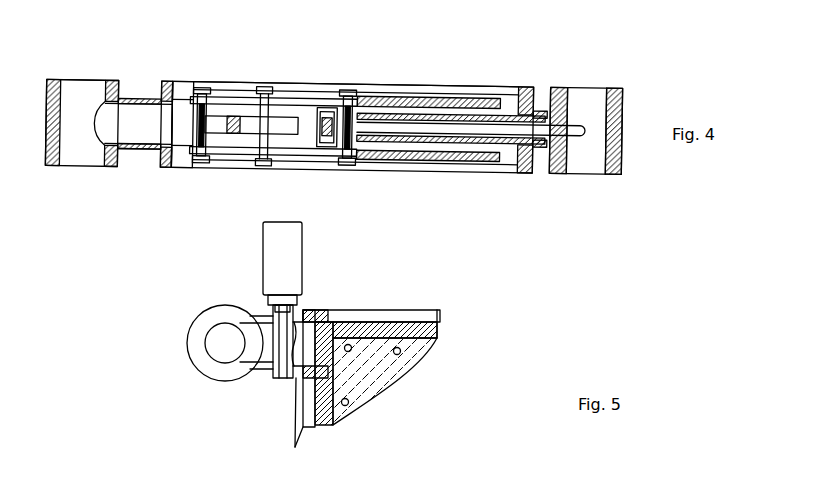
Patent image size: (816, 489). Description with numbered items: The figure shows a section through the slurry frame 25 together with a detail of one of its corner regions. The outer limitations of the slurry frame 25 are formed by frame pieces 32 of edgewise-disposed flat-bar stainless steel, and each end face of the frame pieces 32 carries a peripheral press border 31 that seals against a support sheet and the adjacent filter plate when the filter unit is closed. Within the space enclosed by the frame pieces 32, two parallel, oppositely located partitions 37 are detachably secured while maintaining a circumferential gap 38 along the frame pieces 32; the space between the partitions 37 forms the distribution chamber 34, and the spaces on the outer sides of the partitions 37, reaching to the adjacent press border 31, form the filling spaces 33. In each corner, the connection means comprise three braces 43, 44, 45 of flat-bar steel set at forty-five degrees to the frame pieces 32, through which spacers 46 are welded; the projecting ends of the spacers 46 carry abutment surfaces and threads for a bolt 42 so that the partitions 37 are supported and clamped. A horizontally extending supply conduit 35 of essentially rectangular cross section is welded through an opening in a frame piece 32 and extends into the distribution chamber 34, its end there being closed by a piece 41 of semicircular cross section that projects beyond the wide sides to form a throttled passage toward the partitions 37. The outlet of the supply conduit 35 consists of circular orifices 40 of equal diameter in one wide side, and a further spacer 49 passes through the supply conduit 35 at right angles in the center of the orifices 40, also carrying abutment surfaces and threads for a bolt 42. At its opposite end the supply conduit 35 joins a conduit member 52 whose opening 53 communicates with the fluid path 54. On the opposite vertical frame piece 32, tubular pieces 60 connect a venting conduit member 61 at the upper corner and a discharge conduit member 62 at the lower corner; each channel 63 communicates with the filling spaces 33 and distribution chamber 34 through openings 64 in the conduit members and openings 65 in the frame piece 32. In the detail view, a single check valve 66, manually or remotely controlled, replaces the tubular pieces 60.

In FIG. 4, the slurry frame 25 is at (466, 84).
In FIG. 5, the slurry frame 25 is at (372, 310).
In FIG. 4, the press border 31 is at (538, 107).
In FIG. 4, the frame piece 32 is at (181, 128).
In FIG. 5, the frame piece 32 is at (306, 405).
In FIG. 4, the filling space 33 is at (488, 89).
In FIG. 4, the distribution chamber 34 is at (421, 147).
In FIG. 4, the supply conduit 35 is at (424, 141).
In FIG. 4, the partition 37 is at (444, 96).
In FIG. 5, the partition 37 is at (408, 368).
In FIG. 4, the gap 38 is at (176, 96).
In FIG. 4, the orifice 40 is at (330, 99).
In FIG. 4, the piece 41 is at (320, 145).
In FIG. 4, the bolt 42 is at (262, 88).
In FIG. 5, the bolt 42 is at (397, 355).
In FIG. 4, the brace 43 is at (140, 153).
In FIG. 4, the brace 44 is at (250, 97).
In FIG. 4, the brace 45 is at (288, 118).
In FIG. 4, the spacer 46 is at (214, 148).
In FIG. 4, the spacer 49 is at (352, 108).
In FIG. 4, the conduit member 52 is at (616, 104).
In FIG. 4, the opening 53 is at (572, 124).
In FIG. 4, the fluid path 54 is at (592, 158).
In FIG. 4, the tubular piece 60 is at (142, 100).
In FIG. 5, the conduit member 61 is at (197, 350).
In FIG. 4, the conduit member 62 is at (53, 170).
In FIG. 5, the channel 63 is at (222, 356).
In FIG. 4, the opening 64 is at (86, 74).
In FIG. 4, the opening 65 is at (180, 122).
In FIG. 5, the opening 65 is at (310, 347).
In FIG. 5, the check valve 66 is at (267, 362).